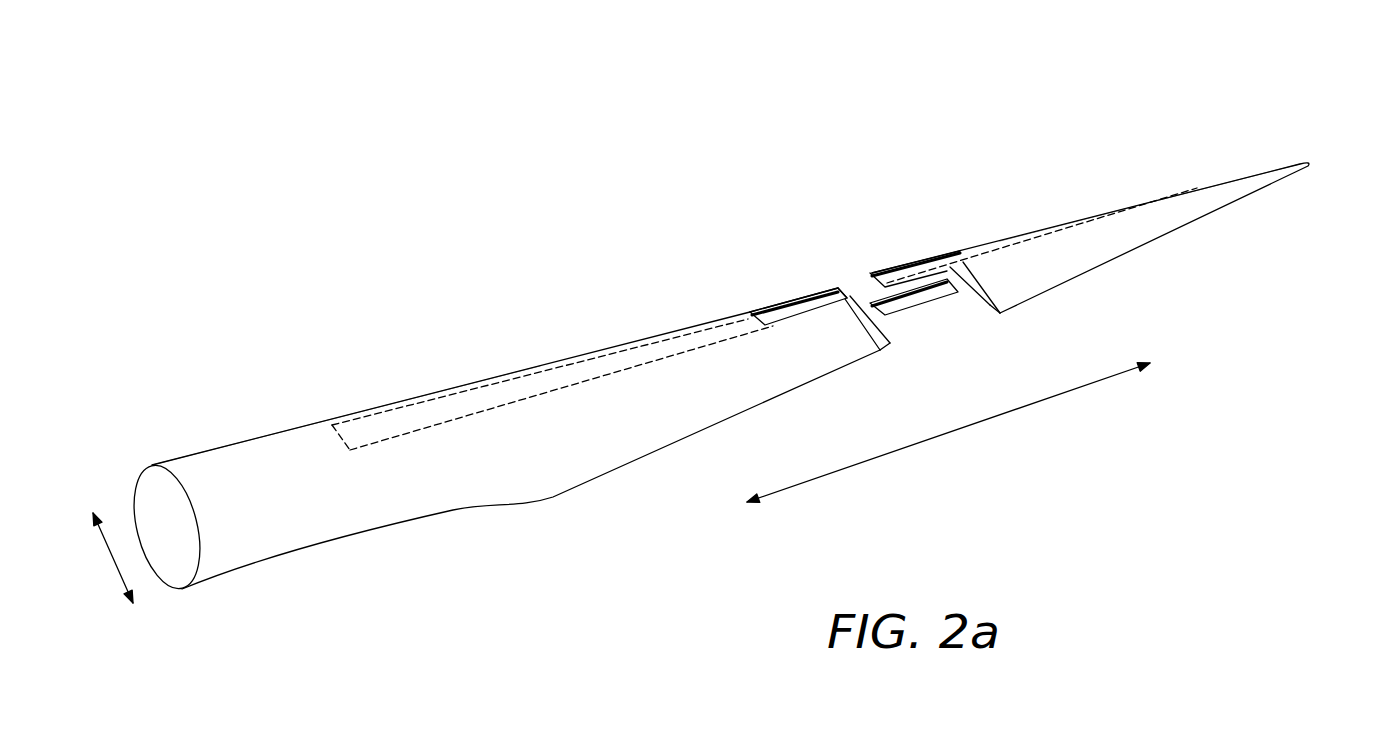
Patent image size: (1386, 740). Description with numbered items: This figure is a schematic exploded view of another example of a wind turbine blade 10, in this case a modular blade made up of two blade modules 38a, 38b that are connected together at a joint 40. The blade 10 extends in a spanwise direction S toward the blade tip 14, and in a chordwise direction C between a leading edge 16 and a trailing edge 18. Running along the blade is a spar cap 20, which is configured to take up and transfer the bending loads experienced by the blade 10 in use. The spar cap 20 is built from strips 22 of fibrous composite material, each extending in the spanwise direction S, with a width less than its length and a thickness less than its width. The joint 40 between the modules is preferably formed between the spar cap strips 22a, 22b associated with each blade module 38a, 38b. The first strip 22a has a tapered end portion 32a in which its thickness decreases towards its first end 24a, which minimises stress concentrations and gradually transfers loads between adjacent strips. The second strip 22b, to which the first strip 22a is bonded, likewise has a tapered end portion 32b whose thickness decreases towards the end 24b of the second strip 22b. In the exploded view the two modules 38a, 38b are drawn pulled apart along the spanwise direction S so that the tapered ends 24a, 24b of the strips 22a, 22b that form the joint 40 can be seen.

The wind turbine blade 10 is at (290, 122).
The blade tip 14 is at (1310, 163).
The leading edge 16 is at (450, 386).
The trailing edge 18 is at (548, 505).
The spar cap 20 is at (545, 380).
The strip 22 is at (153, 465).
The first strip 22a is at (818, 305).
The second strip 22b is at (1027, 235).
The first end of the first strip 24a is at (845, 292).
The end of the second strip 24b is at (872, 273).
The tapered end portion of the first strip 32a is at (768, 295).
The tapered end portion of the second strip 32b is at (923, 248).
The blade module 38a is at (550, 290).
The blade module 38b is at (1160, 167).
The joint 40 is at (843, 223).
The chordwise direction C is at (110, 558).
The spanwise direction S is at (947, 432).